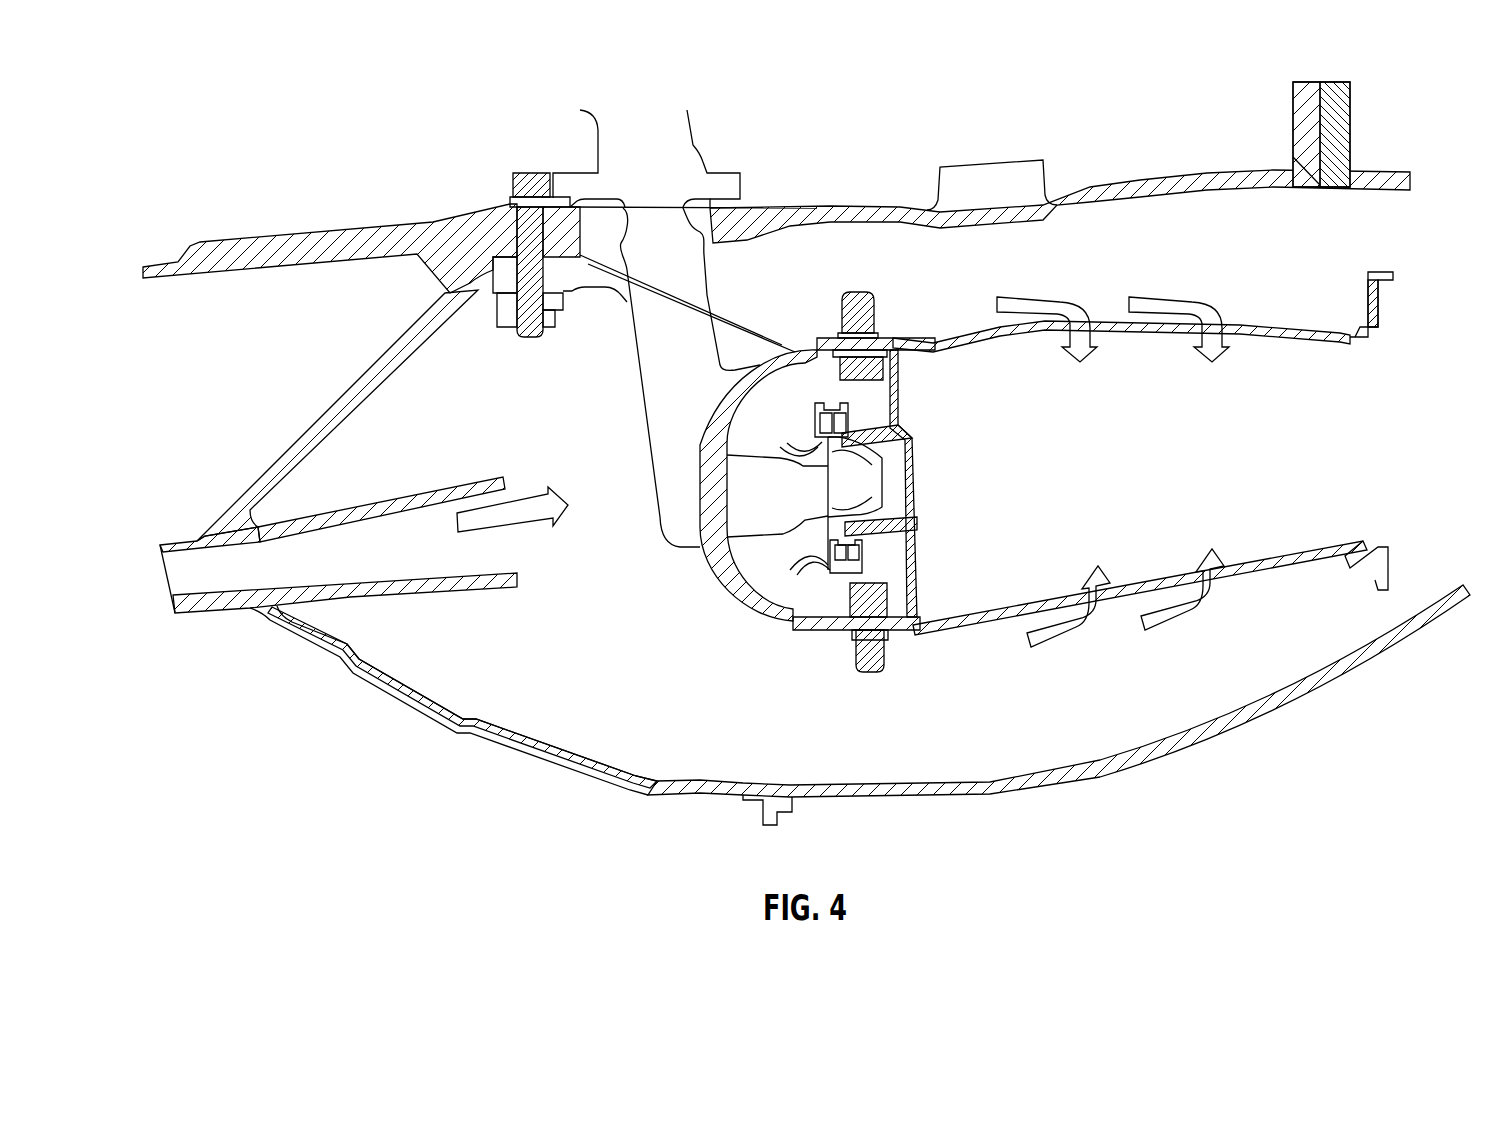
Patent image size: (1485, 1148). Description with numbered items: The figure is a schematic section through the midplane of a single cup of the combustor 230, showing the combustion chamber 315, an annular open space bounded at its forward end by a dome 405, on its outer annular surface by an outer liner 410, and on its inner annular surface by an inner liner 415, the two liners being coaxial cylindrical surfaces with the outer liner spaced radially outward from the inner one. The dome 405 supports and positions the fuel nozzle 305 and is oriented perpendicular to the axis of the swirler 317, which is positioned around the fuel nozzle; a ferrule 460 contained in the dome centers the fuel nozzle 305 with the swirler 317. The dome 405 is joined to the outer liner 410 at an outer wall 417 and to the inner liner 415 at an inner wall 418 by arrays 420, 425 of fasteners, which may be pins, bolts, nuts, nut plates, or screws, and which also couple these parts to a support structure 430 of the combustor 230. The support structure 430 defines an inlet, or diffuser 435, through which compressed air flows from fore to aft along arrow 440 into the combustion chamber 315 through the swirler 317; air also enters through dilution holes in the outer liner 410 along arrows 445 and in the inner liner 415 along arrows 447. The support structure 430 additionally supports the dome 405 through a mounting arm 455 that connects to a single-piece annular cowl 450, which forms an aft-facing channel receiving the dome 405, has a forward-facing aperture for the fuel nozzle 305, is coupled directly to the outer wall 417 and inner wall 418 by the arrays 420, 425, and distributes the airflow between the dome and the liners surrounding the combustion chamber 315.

The combustor 230 is at (223, 121).
The fuel nozzle 305 is at (786, 506).
The combustion chamber 315 is at (1171, 434).
The swirler 317 is at (800, 622).
The dome 405 is at (900, 388).
The outer liner 410 is at (1262, 322).
The inner liner 415 is at (1307, 545).
The outer wall 417 is at (898, 356).
The inner wall 418 is at (920, 613).
The array of fasteners 420 is at (866, 300).
The array of fasteners 425 is at (868, 674).
The support structure 430 is at (363, 228).
The diffuser 435 is at (193, 522).
The arrow 440 is at (517, 503).
The arrows 445 is at (1037, 297).
The arrows 447 is at (1065, 642).
The cowl 450 is at (727, 560).
The mounting arm 455 is at (721, 328).
The ferrule 460 is at (785, 452).